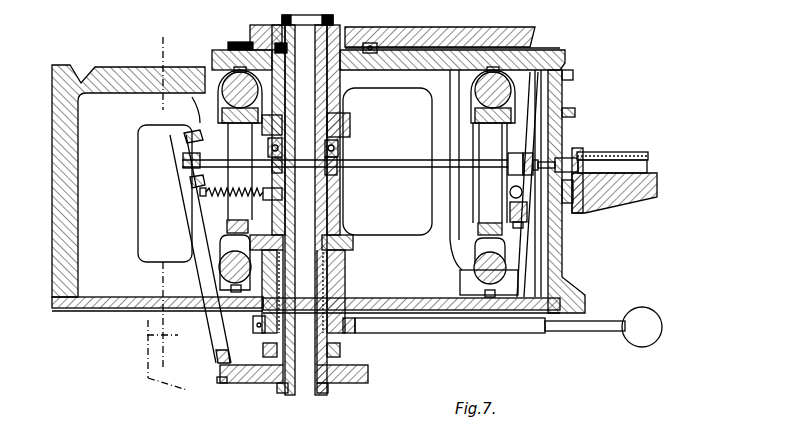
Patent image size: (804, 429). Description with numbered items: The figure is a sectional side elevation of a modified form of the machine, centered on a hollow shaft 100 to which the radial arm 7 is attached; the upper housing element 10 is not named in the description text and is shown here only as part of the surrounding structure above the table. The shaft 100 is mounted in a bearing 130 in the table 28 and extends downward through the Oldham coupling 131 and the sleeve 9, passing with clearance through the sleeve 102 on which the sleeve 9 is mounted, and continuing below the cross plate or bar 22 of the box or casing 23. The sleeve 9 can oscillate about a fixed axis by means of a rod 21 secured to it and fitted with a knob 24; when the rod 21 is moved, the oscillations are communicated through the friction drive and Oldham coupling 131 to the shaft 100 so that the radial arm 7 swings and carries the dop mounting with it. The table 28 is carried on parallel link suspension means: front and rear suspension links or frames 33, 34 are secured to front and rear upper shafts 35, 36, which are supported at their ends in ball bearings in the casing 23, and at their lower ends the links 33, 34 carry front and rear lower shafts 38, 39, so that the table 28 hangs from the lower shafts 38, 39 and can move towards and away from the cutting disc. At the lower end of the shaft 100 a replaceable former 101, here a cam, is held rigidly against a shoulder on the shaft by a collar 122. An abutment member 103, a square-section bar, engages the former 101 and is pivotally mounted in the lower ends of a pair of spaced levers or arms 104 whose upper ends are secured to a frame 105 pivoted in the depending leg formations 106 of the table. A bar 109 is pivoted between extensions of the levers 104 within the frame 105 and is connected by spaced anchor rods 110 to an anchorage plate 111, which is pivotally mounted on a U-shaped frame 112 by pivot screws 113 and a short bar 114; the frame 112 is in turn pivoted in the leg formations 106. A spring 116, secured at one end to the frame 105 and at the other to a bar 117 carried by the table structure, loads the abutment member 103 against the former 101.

The sleeve 9 is at (157, 203).
The radial arm 7 is at (526, 36).
The frame casing 10 is at (415, 28).
The table 28 is at (549, 50).
The rod 21 is at (500, 324).
The cross plate or bar 22 is at (408, 300).
The box or casing 23 is at (553, 268).
The knob 24 is at (638, 332).
The front suspension link or frame 33 is at (490, 216).
The rear suspension link or frame 34 is at (228, 224).
The front upper shaft 35 is at (473, 99).
The rear upper shaft 36 is at (222, 78).
The front lower shaft 38 is at (474, 282).
The rear lower shaft 39 is at (222, 263).
The hollow shaft 100 is at (328, 203).
The replaceable former 101 is at (348, 385).
The sleeve 102 is at (347, 275).
The abutment member 103 is at (220, 380).
The levers or arms 104 is at (213, 330).
The frame 105 is at (185, 133).
The depending leg formations 106 is at (210, 145).
The bar 109 is at (188, 170).
The anchor rods 110 is at (394, 162).
The anchorage plate 111 is at (531, 156).
The U-shaped frame 112 is at (528, 212).
The pivot screws 113 is at (511, 190).
The short bar 114 is at (510, 160).
The spring 116 is at (241, 187).
The bar 117 is at (298, 130).
The collar 122 is at (282, 393).
The bearing 130 is at (342, 108).
The Oldham coupling 131 is at (350, 236).